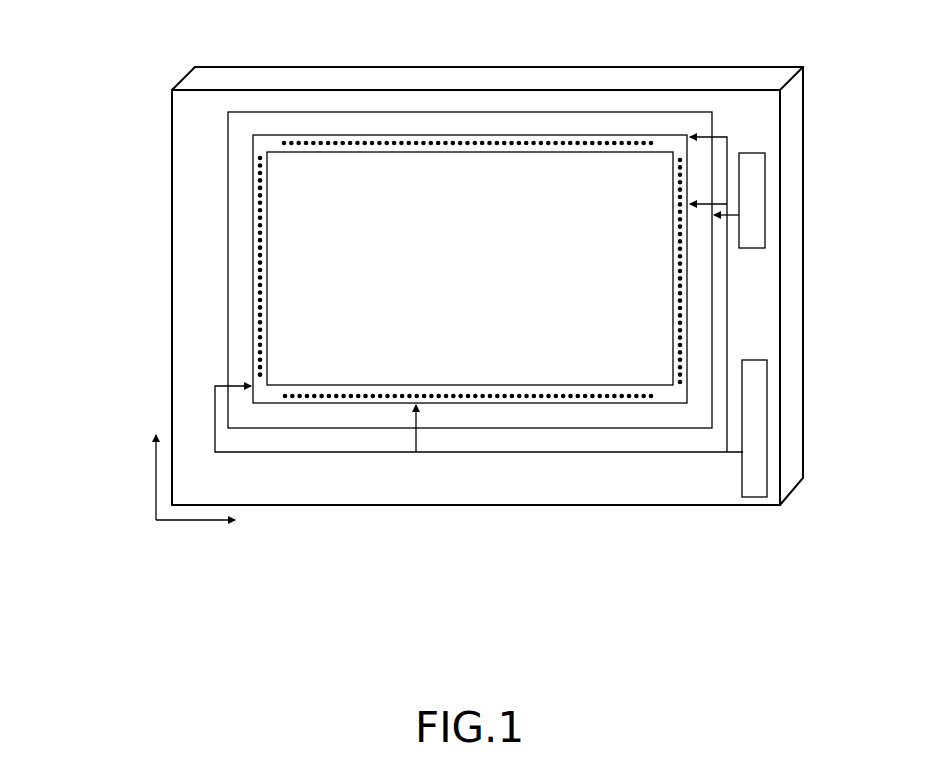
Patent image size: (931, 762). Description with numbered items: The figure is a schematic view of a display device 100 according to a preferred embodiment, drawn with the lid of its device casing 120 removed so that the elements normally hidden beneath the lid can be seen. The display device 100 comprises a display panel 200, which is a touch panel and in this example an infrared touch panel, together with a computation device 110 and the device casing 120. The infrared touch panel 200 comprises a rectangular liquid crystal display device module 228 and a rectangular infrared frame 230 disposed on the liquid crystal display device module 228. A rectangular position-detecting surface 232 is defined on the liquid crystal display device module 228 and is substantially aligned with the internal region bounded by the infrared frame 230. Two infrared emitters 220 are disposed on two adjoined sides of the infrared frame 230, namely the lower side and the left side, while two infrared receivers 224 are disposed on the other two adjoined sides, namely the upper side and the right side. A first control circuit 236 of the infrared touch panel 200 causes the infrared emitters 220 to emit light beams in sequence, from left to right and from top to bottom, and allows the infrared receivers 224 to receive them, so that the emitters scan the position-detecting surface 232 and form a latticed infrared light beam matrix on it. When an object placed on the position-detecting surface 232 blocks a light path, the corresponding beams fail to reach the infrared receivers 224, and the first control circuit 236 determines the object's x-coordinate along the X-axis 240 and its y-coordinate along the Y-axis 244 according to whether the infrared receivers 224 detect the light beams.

The display device 100 is at (287, 88).
The computation device 110 is at (755, 152).
The device casing 120 is at (595, 76).
The display panel 200 is at (333, 111).
The infrared emitter 220 is at (257, 178).
The infrared receiver 224 is at (382, 142).
The liquid crystal display device module 228 is at (665, 150).
The infrared frame 230 is at (683, 404).
The position-detecting surface 232 is at (512, 170).
The first control circuit 236 is at (752, 359).
The X-axis 240 is at (193, 522).
The Y-axis 244 is at (156, 486).